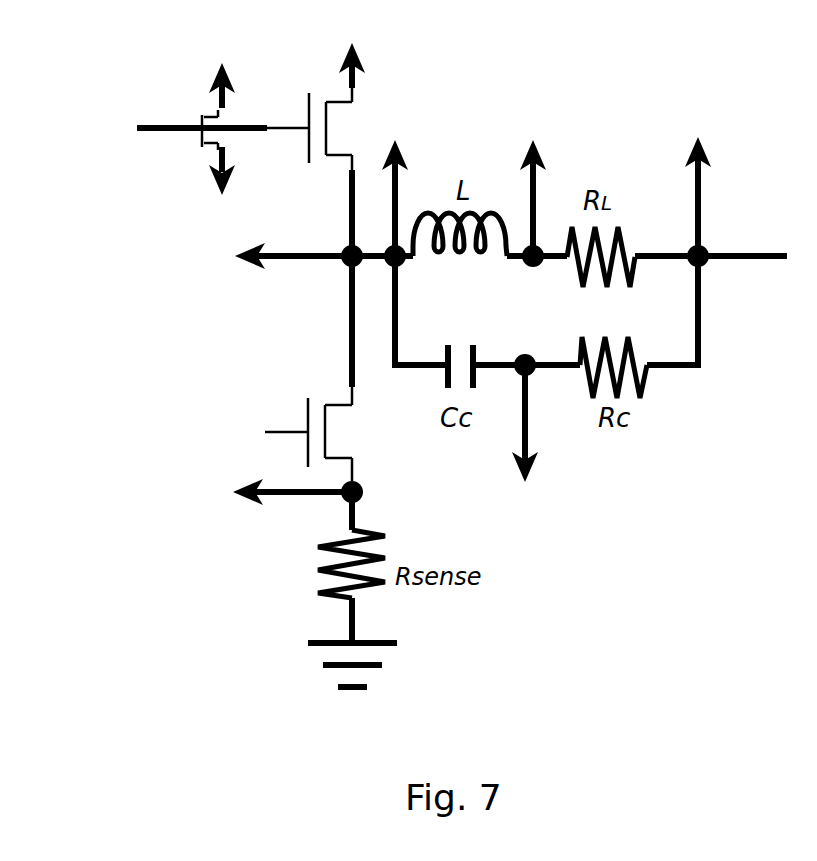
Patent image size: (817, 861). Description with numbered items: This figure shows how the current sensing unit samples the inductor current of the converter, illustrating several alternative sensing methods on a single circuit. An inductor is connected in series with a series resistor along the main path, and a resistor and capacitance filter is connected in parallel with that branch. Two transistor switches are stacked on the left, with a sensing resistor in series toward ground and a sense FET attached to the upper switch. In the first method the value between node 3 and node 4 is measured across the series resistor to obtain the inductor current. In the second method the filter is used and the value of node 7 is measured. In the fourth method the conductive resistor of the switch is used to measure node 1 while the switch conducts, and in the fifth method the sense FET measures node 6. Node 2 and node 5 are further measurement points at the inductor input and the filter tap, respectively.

The node 1 is at (283, 253).
The inductor input terminal 2 is at (395, 186).
The node 3 is at (532, 186).
The node 4 is at (697, 186).
The compensation network terminal 5 is at (525, 435).
The node 6 is at (156, 129).
The node 7 is at (281, 493).